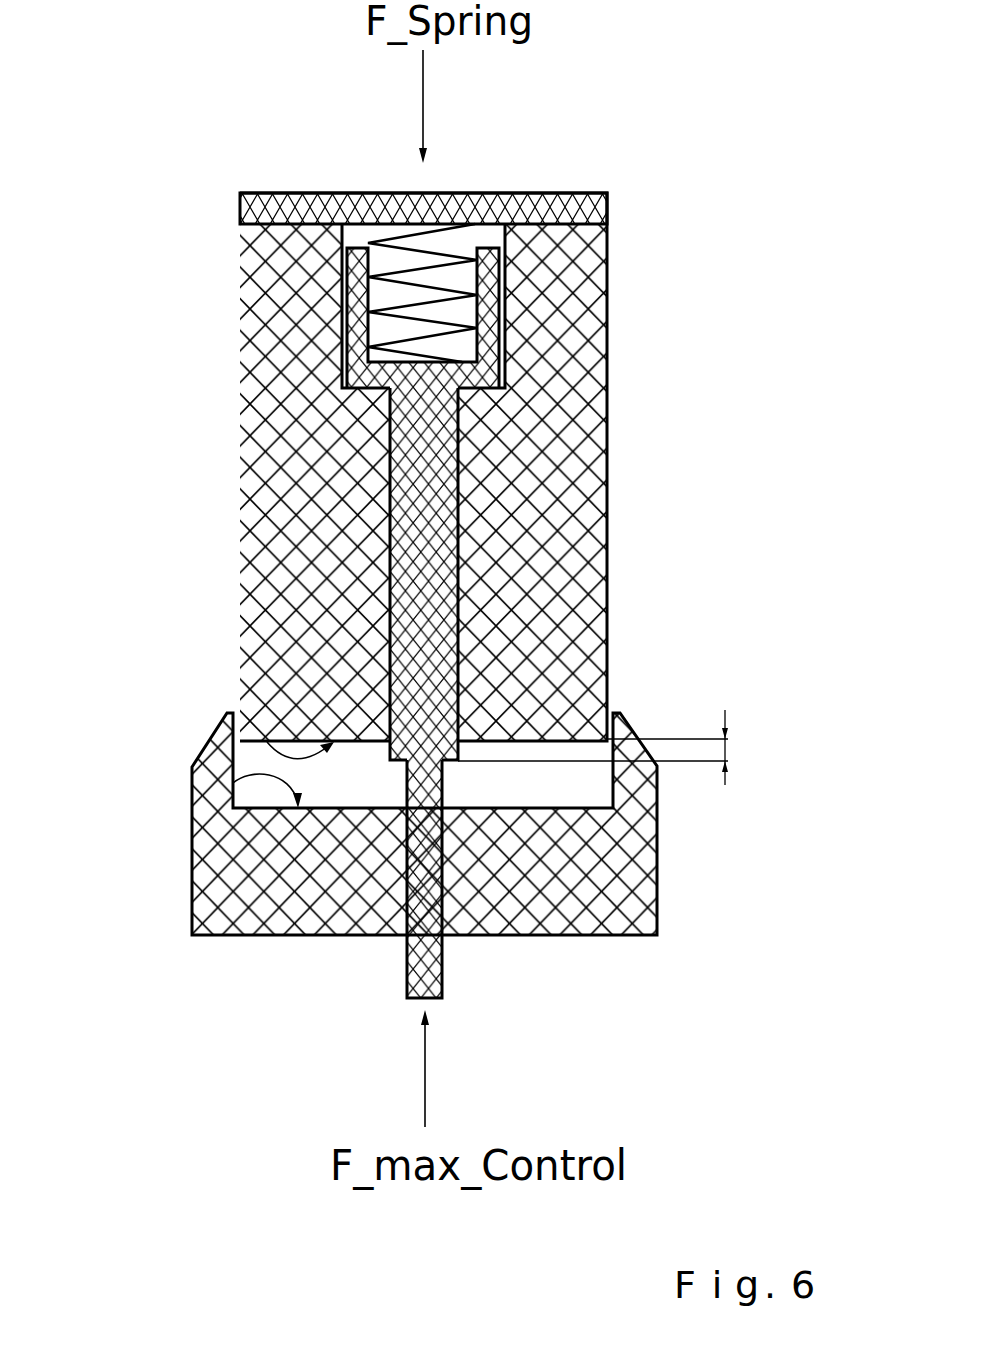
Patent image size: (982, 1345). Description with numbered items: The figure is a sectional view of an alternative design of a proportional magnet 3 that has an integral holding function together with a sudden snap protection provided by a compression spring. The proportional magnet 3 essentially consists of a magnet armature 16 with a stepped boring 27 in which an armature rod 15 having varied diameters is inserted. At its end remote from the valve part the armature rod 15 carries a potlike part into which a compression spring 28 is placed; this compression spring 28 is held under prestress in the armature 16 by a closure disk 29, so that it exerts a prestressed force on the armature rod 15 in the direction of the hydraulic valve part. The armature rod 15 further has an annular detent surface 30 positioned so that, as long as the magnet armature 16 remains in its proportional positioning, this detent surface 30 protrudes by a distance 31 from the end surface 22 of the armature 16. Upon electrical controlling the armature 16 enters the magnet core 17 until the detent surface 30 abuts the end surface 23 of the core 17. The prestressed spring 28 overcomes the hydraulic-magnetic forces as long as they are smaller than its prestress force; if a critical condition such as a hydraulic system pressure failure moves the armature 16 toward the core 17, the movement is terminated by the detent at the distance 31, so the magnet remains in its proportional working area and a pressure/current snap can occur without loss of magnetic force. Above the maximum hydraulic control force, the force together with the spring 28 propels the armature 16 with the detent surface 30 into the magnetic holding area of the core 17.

The proportional magnet 3 is at (210, 440).
The armature rod 15 is at (455, 547).
The magnet armature 16 is at (560, 342).
The magnet core 17 is at (552, 872).
The end surface of the armature 22 is at (242, 718).
The end surface of the core 23 is at (193, 822).
The stepped boring 27 is at (353, 240).
The compression spring 28 is at (453, 250).
The closure disk 29 is at (550, 210).
The annular detent surface 30 is at (398, 760).
The distance 31 is at (625, 747).